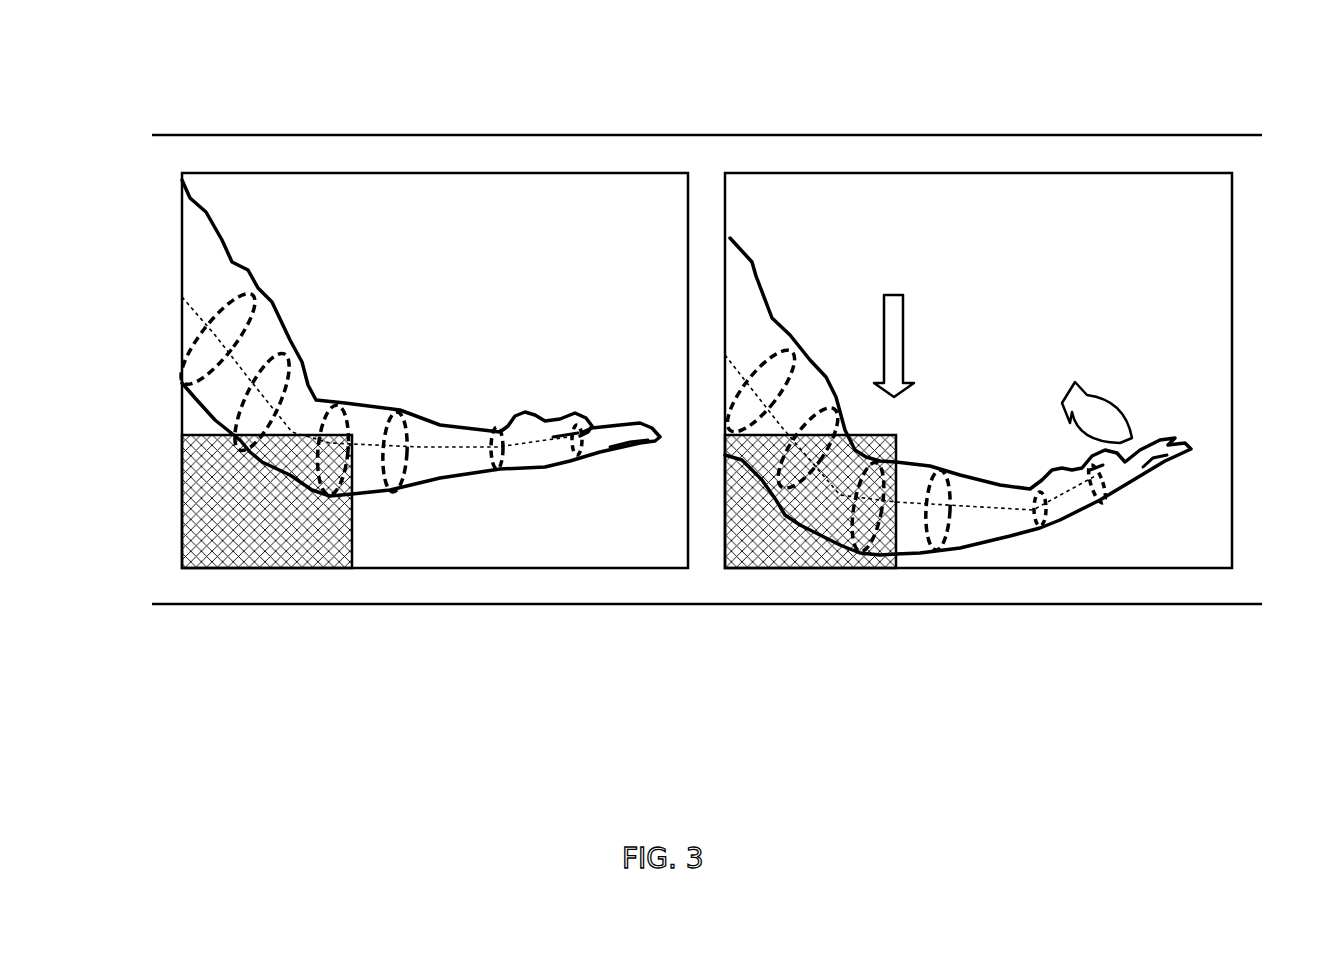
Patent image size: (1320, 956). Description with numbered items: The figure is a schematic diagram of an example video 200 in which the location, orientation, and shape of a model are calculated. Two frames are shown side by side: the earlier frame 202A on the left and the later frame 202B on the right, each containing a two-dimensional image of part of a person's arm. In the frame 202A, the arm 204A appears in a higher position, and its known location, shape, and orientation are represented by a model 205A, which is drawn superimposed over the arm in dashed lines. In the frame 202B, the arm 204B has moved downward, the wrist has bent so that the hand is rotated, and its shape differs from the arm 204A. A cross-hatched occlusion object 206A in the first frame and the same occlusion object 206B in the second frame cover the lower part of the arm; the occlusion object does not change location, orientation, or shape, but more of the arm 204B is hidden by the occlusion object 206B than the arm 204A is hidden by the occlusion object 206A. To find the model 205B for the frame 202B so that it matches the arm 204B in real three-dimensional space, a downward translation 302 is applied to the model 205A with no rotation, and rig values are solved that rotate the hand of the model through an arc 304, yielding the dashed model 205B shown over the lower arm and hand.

The video 200 is at (158, 87).
The frame 202A is at (182, 184).
The frame 202B is at (1232, 185).
The arm 204A is at (232, 264).
The arm 204B is at (794, 340).
The model 205A is at (423, 450).
The model 205B is at (960, 505).
The occlusion object 206A is at (352, 540).
The occlusion object 206B is at (896, 558).
The translation 302 is at (896, 295).
The arc 304 is at (1118, 414).